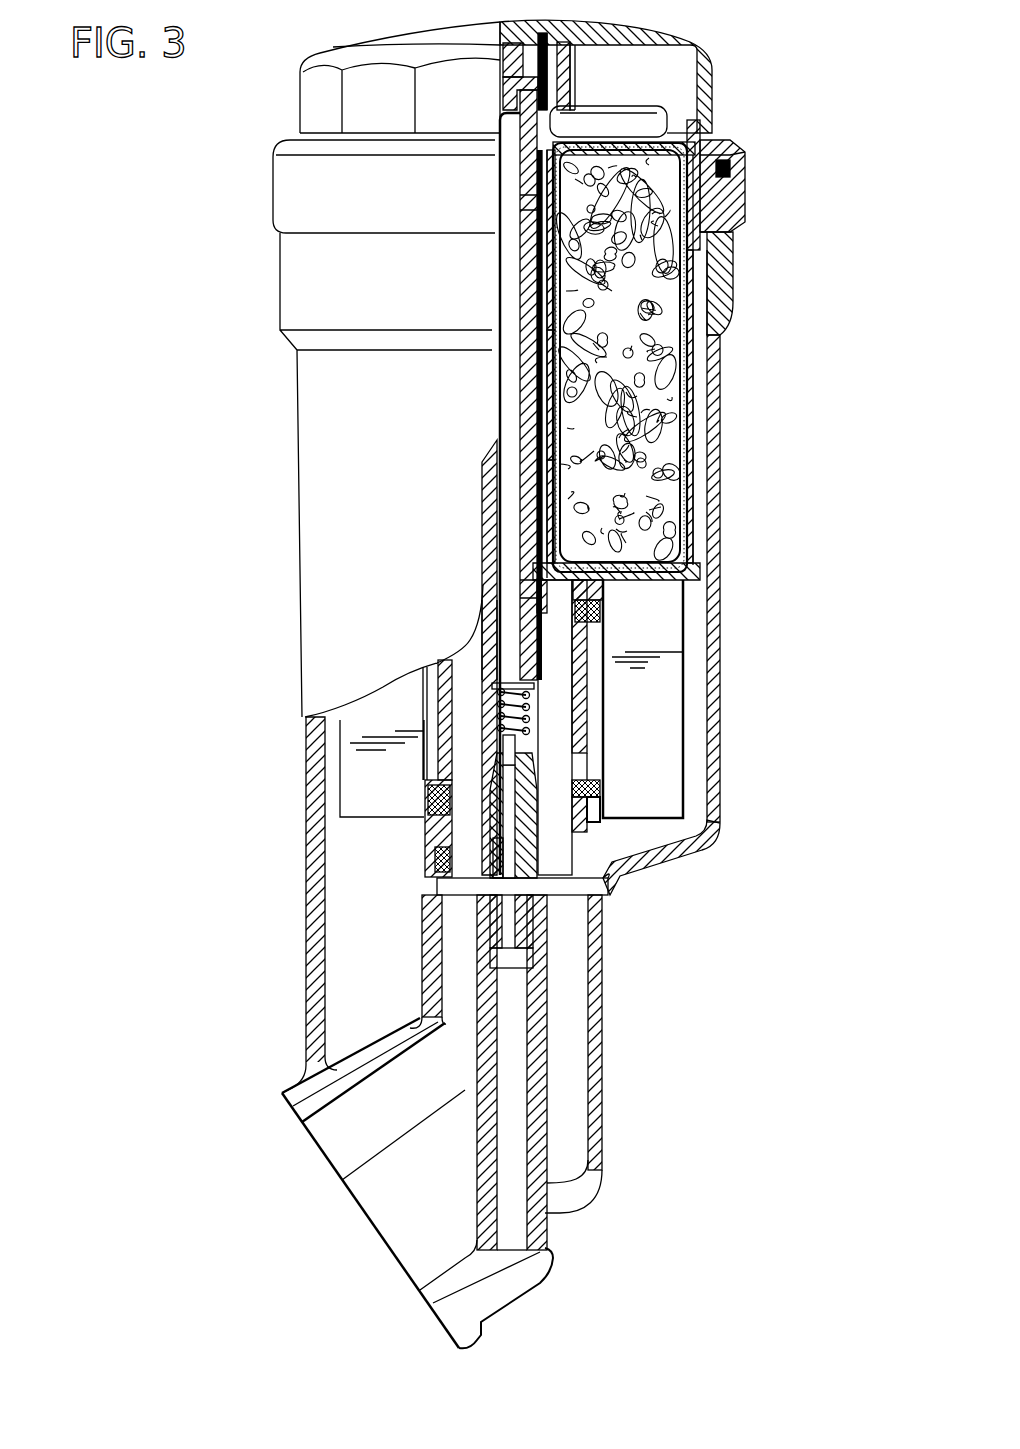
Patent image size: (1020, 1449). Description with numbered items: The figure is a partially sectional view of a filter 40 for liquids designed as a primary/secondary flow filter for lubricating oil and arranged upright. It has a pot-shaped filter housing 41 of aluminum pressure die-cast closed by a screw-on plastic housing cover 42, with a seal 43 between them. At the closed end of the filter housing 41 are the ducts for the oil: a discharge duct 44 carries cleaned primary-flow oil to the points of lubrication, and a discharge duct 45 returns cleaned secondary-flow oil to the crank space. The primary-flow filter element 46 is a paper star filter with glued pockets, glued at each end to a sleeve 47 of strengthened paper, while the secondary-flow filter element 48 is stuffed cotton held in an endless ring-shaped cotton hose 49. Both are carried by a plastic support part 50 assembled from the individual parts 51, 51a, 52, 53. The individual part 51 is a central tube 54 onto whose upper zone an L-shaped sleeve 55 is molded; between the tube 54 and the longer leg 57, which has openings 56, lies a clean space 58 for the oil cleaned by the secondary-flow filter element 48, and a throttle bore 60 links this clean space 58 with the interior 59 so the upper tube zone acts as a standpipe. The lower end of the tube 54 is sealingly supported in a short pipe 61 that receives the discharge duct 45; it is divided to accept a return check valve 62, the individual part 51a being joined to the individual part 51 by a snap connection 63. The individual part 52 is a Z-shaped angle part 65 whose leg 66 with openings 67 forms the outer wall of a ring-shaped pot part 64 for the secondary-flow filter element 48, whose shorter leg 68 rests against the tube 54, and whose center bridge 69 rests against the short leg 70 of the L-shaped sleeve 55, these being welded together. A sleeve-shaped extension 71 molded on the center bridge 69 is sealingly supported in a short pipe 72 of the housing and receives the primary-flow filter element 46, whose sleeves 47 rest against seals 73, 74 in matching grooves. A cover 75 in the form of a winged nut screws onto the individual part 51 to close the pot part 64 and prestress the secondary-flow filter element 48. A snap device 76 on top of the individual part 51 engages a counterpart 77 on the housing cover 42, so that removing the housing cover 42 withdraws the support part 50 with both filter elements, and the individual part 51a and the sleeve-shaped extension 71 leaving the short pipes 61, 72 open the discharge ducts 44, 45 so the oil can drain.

The filter for liquids 40 is at (283, 560).
The filter housing 41 is at (727, 318).
The housing cover 42 is at (714, 90).
The seal 43 is at (733, 167).
The discharge duct 44 is at (343, 1132).
The discharge duct 45 is at (510, 1220).
The primary-flow filter element 46 is at (672, 668).
The sleeve 47 is at (600, 613).
The secondary-flow filter element 48 is at (673, 407).
The hose 49 is at (673, 147).
The support part 50 is at (478, 474).
The individual part 51 is at (530, 163).
The individual part 51a is at (493, 843).
The individual part 52 is at (690, 503).
The individual part 53 is at (503, 47).
The central tube 54 is at (490, 640).
The L-shaped sleeve 55 is at (547, 508).
The openings 56 is at (545, 275).
The longer leg 57 is at (540, 305).
The clean space 58 is at (545, 425).
The interior 59 is at (508, 118).
The throttle bore 60 is at (530, 203).
The short pipe 61 is at (528, 1033).
The return check valve 62 is at (527, 697).
The snap connection 63 is at (533, 813).
The ring-shaped pot part 64 is at (548, 398).
The Z-shaped angle part 65 is at (687, 453).
The leg 66 is at (693, 360).
The openings 67 is at (747, 207).
The shorter leg 68 is at (533, 593).
The center bridge 69 is at (680, 577).
The short leg 70 is at (555, 727).
The sleeve-shaped extension 71 is at (583, 733).
The short pipe 72 is at (430, 937).
The seal 73 is at (600, 600).
The seal 74 is at (600, 800).
The cover 75 is at (639, 132).
The snap device 76 is at (518, 90).
The counterpart 77 is at (548, 62).